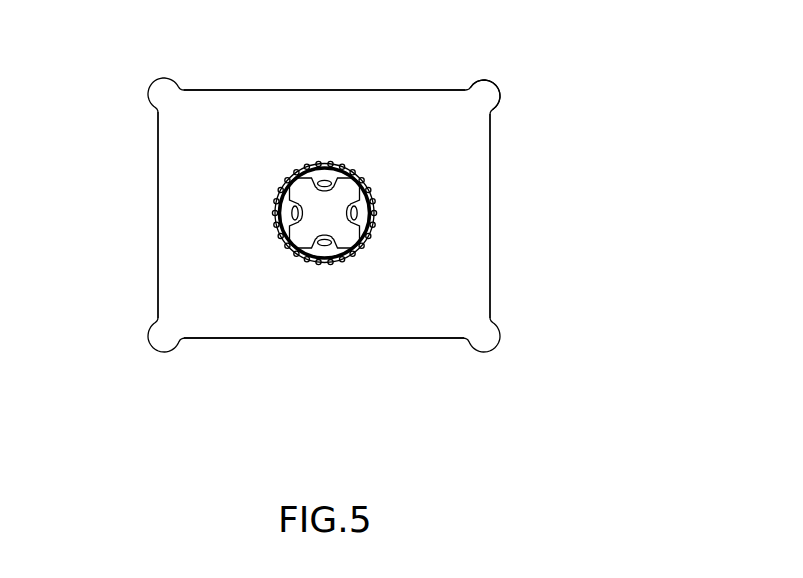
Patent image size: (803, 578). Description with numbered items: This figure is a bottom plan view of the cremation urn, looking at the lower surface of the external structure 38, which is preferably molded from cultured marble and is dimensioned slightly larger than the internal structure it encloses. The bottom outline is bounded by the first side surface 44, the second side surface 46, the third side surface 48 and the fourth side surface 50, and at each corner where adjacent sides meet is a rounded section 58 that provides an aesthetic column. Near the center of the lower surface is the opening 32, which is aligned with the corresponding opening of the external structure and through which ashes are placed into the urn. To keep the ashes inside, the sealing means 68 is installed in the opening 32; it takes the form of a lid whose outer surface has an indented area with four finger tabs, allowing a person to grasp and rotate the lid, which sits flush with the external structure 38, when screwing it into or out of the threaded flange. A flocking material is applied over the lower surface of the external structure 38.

The opening 32 is at (283, 245).
The external structure 38 is at (441, 166).
The first side surface 44 is at (375, 338).
The second side surface 46 is at (490, 262).
The third side surface 48 is at (277, 90).
The fourth side surface 50 is at (158, 195).
The rounded section 58 is at (491, 93).
The sealing means 68 is at (345, 226).